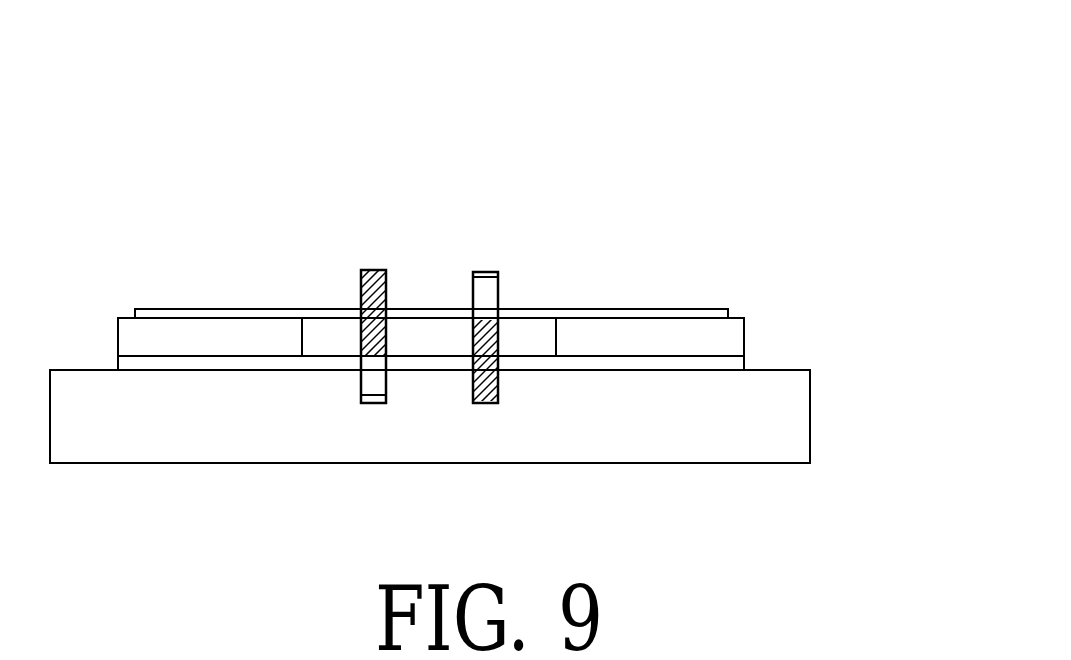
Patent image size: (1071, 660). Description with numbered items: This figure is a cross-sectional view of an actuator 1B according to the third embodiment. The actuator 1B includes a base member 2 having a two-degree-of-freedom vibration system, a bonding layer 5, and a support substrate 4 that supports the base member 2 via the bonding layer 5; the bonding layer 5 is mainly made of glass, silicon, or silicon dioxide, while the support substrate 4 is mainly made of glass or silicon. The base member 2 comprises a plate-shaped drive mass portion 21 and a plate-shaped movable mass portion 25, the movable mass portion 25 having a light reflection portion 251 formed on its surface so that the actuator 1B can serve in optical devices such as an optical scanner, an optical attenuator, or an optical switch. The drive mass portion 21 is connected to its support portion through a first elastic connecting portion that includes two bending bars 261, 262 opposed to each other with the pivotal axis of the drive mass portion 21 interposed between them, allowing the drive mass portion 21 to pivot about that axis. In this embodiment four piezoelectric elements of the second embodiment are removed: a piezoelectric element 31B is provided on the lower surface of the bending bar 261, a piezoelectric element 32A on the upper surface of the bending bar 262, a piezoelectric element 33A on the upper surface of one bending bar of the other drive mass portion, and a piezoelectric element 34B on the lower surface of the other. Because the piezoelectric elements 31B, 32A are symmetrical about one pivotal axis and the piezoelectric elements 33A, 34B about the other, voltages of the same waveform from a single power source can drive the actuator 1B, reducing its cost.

The actuator 1B is at (683, 135).
The base member 2 is at (746, 334).
The support substrate 4 is at (812, 418).
The bonding layer 5 is at (735, 365).
The drive mass portion 21 is at (330, 337).
The movable mass portion 25 is at (633, 337).
The light reflection portion 251 is at (200, 310).
The piezoelectric element 32A is at (365, 269).
The piezoelectric element 33A is at (489, 272).
The piezoelectric element 34B is at (373, 385).
The piezoelectric element 31B is at (487, 402).
The bending bar 262 is at (374, 338).
The bending bar 261 is at (488, 336).